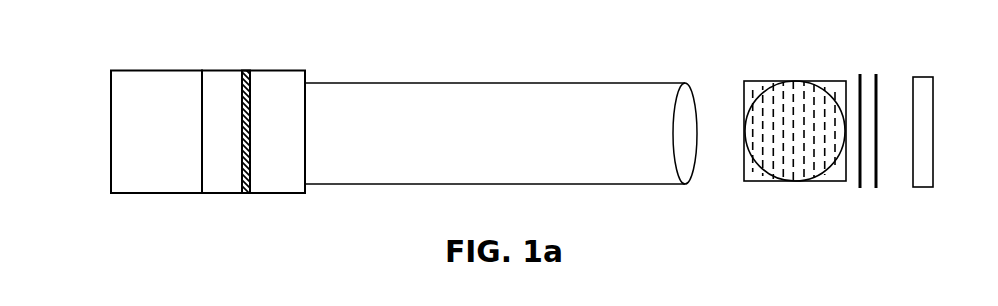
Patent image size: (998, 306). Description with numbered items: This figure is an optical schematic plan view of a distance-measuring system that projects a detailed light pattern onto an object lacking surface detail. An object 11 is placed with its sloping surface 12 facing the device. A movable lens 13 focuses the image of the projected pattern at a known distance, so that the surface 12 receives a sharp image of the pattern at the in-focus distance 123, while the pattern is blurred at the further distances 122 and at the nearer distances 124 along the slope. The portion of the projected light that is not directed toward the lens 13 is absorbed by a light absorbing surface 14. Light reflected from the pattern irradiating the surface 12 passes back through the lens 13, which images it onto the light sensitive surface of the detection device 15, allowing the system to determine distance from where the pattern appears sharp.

The object 11 is at (144, 70).
The sloping surface 12 is at (280, 80).
The further distance 122 is at (210, 70).
The in-focus distance 123 is at (248, 70).
The nearer distance 124 is at (291, 194).
The movable lens 13 is at (673, 128).
The light absorbing surface 14 is at (761, 81).
The detection device 15 is at (922, 78).